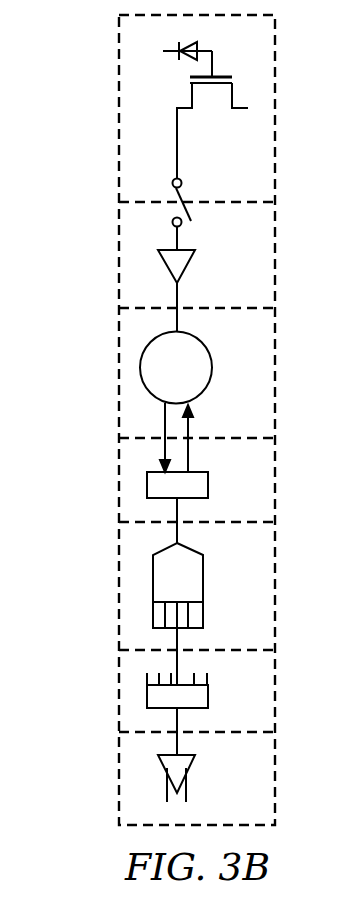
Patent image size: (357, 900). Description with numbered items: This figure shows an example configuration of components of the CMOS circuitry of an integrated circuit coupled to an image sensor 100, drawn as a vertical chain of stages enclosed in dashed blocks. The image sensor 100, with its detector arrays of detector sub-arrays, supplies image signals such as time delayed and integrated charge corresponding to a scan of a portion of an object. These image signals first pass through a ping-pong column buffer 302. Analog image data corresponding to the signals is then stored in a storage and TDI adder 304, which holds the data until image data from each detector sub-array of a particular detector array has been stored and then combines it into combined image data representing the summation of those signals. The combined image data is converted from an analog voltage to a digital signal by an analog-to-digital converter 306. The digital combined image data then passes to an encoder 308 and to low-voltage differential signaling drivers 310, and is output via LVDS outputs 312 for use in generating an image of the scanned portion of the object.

The image sensor 100 is at (118, 113).
The ping-pong column buffer 302 is at (118, 267).
The storage and TDI adder 304 is at (118, 378).
The analog-to-digital (A/D) converter 306 is at (118, 488).
The encoder 308 is at (118, 595).
The low-voltage differential signaling (LVDS) drivers 310 is at (118, 683).
The LVDS outputs 312 is at (118, 795).